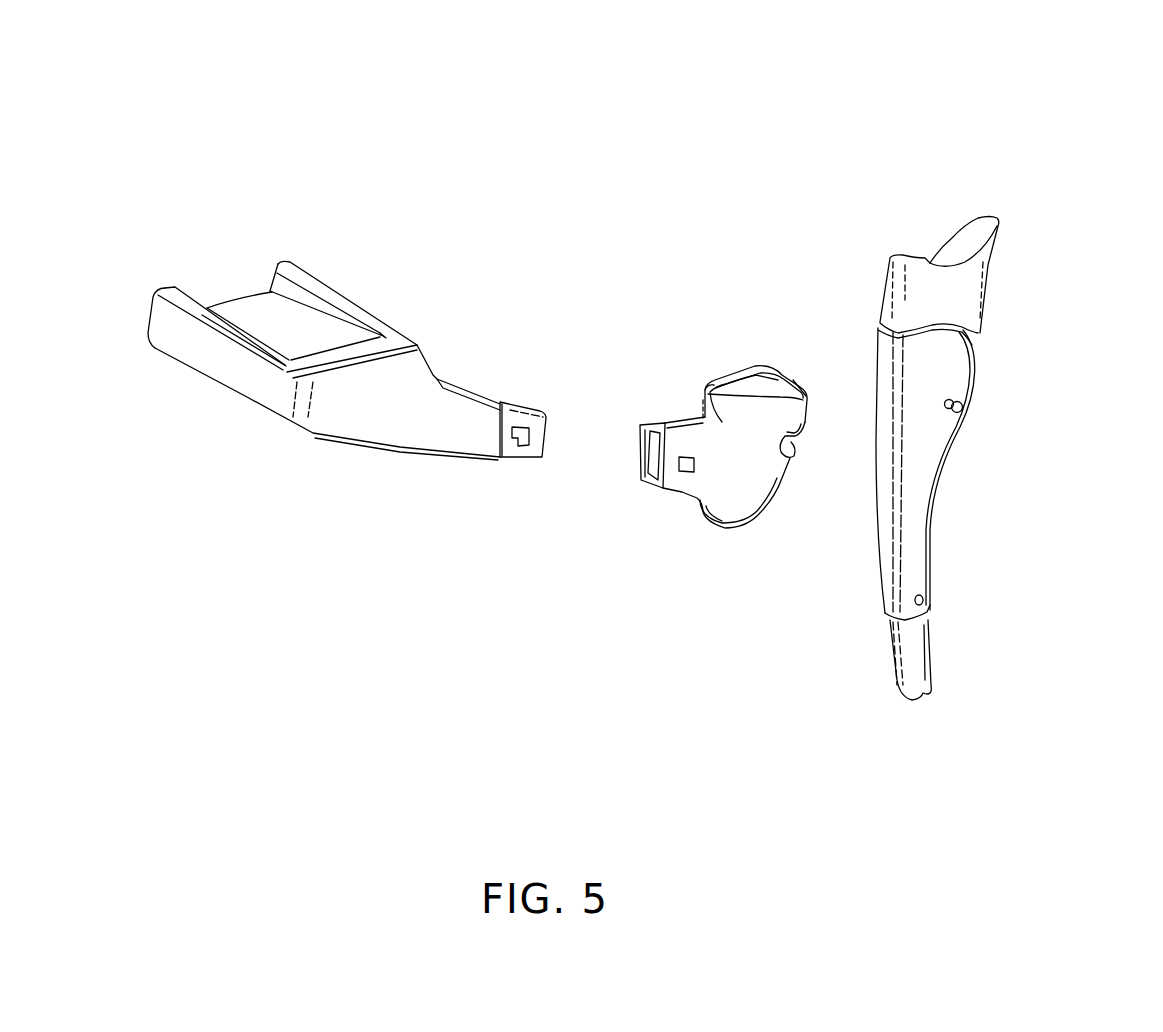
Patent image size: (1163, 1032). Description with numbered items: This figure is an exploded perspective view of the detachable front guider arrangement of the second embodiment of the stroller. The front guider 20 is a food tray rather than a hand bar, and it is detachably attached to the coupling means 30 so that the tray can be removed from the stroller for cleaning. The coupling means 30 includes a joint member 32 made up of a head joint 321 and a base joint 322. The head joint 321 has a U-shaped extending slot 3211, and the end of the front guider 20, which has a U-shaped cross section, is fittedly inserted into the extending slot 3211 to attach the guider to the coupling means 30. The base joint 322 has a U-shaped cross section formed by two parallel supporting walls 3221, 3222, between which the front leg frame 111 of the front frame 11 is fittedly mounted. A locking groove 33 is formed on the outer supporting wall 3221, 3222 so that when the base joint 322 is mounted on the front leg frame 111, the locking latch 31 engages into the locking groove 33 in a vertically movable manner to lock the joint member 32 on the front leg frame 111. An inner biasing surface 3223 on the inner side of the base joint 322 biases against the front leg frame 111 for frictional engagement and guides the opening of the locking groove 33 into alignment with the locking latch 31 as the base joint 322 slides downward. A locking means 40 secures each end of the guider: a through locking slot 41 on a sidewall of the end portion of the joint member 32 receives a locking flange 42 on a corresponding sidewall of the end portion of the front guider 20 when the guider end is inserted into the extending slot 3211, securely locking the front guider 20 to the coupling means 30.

The front guider 20 is at (253, 380).
The locking means 40 is at (462, 596).
The locking flange 42 is at (513, 436).
The joint member 32 is at (562, 163).
The head joint 321 is at (677, 483).
The extending slot 3211 is at (638, 442).
The locking groove 33 is at (788, 475).
The locking slot 41 is at (698, 467).
The base joint 322 is at (738, 240).
The supporting wall 3221 is at (737, 383).
The supporting wall 3222 is at (795, 410).
The inner biasing surface 3223 is at (717, 383).
The coupling means 30 is at (890, 181).
The locking latch 31 is at (967, 408).
The front frame 11 is at (976, 711).
The front leg frame 111 is at (913, 658).